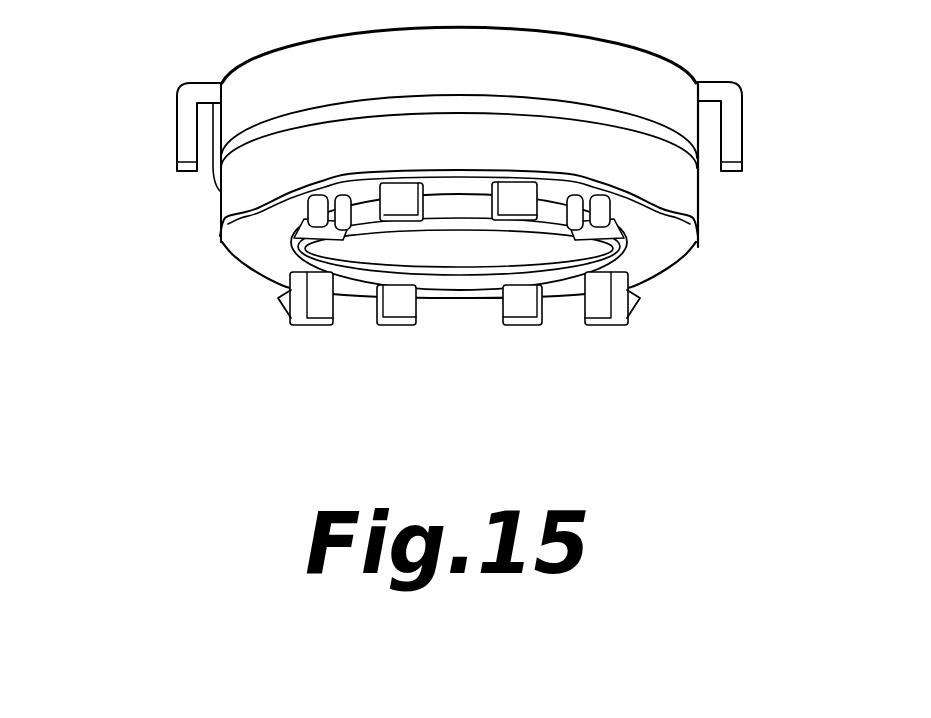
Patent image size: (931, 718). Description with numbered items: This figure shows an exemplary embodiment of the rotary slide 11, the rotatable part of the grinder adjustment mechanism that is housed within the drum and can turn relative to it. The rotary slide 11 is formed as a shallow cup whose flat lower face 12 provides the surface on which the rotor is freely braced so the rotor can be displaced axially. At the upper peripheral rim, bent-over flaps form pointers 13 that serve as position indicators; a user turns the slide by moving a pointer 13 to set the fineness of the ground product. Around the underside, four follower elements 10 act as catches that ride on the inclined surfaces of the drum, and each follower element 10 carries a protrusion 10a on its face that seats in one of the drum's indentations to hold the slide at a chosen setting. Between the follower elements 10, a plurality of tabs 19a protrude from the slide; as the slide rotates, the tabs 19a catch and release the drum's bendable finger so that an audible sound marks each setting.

The follower element 10 is at (313, 306).
The protrusion 10a is at (222, 240).
The rotary slide 11 is at (150, 190).
The flat lower face 12 is at (666, 243).
The pointer 13 is at (177, 109).
The tab 19a is at (516, 195).